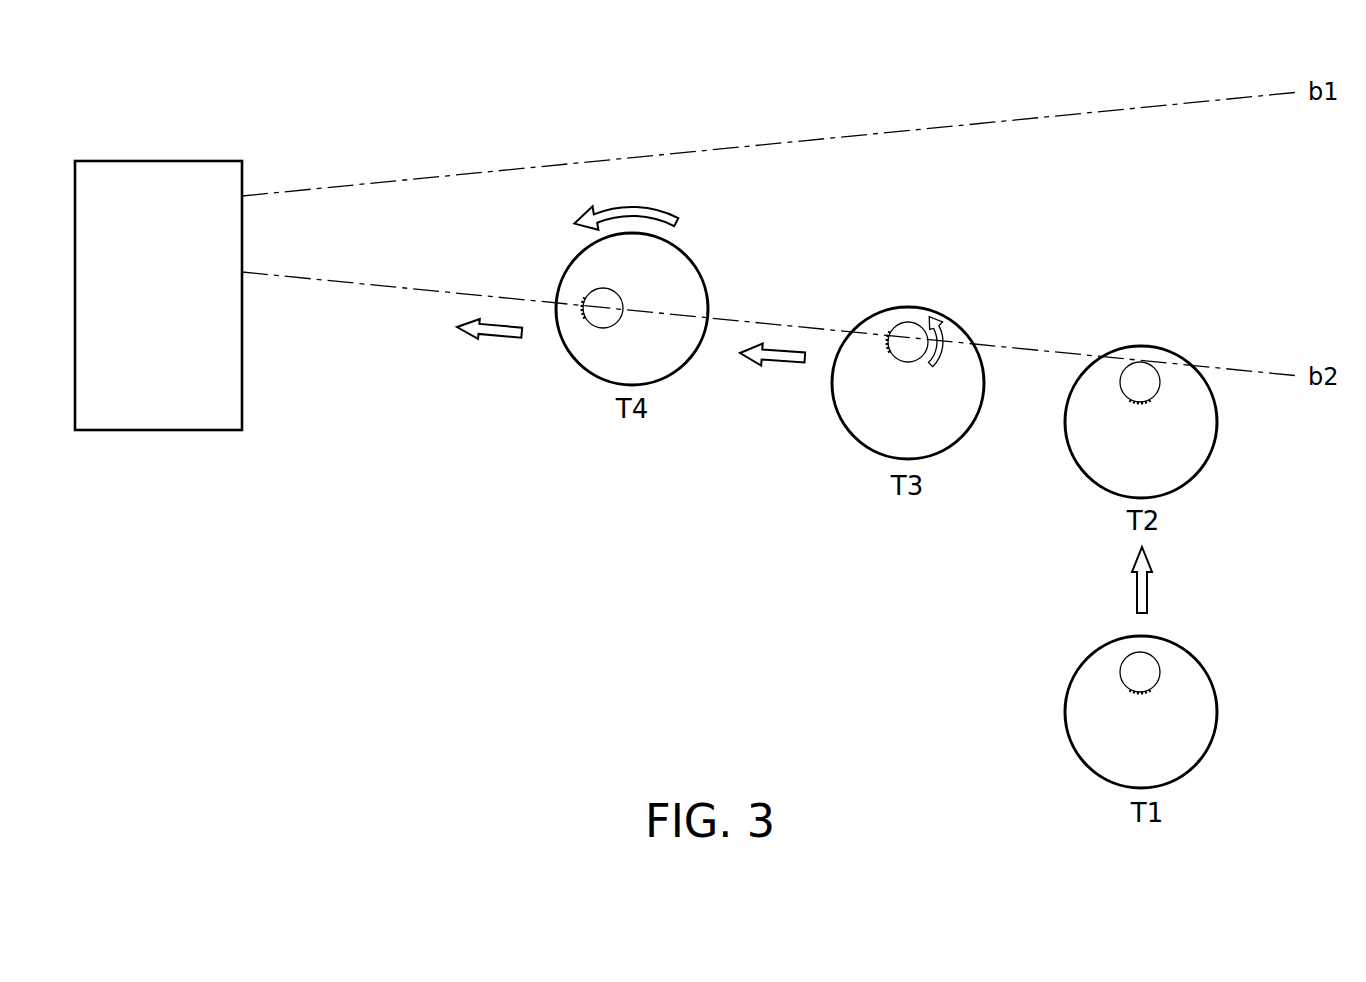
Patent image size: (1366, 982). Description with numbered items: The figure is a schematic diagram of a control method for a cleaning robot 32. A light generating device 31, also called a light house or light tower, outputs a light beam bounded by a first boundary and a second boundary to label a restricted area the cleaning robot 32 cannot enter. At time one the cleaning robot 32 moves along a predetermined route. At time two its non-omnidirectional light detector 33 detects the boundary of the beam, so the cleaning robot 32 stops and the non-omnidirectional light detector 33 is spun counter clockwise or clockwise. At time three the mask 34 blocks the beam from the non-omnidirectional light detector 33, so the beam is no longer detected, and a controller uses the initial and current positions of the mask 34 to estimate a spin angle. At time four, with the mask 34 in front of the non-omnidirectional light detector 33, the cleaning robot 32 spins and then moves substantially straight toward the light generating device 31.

The light generating device 31 is at (158, 161).
The cleaning robot 32 is at (662, 381).
The non-omnidirectional light detector 33 is at (602, 328).
The mask 34 is at (583, 308).